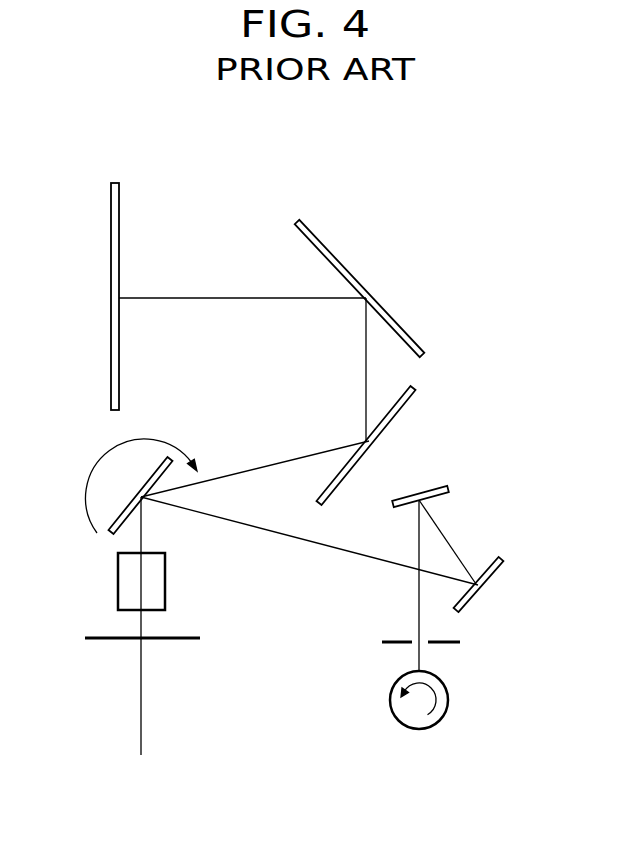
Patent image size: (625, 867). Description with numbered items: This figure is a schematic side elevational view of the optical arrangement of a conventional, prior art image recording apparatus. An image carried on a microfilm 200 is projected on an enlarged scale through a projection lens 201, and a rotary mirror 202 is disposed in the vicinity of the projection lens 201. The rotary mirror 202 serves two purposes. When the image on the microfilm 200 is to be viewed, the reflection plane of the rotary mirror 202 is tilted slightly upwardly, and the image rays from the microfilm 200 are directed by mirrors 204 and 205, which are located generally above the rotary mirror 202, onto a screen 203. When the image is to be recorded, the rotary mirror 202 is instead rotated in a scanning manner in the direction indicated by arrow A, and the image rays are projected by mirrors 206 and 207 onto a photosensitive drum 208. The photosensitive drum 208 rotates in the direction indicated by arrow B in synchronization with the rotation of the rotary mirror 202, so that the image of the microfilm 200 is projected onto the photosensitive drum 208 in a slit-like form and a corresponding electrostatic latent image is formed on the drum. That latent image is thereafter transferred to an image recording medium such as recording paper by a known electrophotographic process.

The microfilm 200 is at (187, 641).
The projection lens 201 is at (157, 588).
The rotary mirror 202 is at (123, 514).
The screen 203 is at (119, 192).
The mirror 204 is at (413, 395).
The mirror 205 is at (418, 339).
The mirror 206 is at (501, 573).
The mirror 207 is at (440, 487).
The photosensitive drum 208 is at (443, 718).